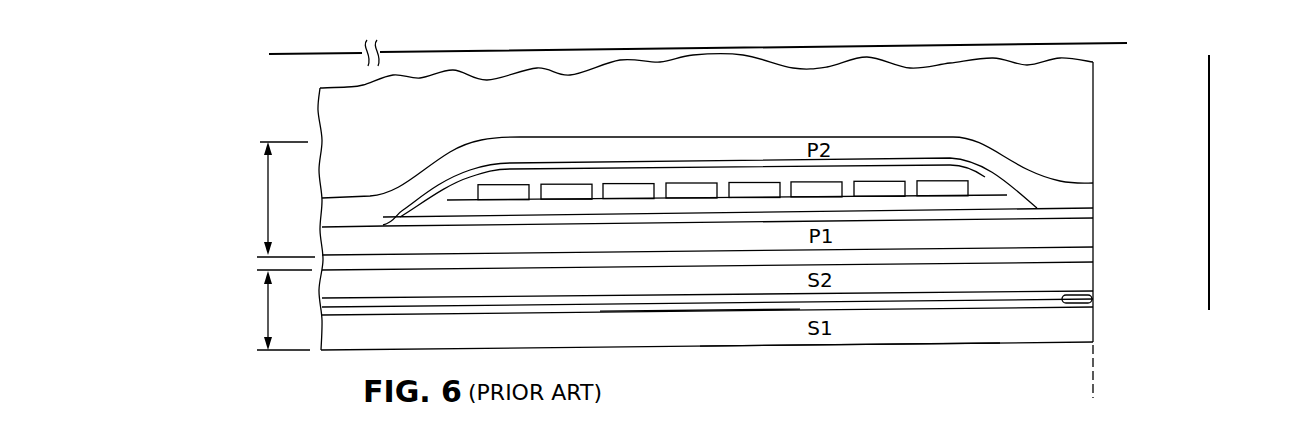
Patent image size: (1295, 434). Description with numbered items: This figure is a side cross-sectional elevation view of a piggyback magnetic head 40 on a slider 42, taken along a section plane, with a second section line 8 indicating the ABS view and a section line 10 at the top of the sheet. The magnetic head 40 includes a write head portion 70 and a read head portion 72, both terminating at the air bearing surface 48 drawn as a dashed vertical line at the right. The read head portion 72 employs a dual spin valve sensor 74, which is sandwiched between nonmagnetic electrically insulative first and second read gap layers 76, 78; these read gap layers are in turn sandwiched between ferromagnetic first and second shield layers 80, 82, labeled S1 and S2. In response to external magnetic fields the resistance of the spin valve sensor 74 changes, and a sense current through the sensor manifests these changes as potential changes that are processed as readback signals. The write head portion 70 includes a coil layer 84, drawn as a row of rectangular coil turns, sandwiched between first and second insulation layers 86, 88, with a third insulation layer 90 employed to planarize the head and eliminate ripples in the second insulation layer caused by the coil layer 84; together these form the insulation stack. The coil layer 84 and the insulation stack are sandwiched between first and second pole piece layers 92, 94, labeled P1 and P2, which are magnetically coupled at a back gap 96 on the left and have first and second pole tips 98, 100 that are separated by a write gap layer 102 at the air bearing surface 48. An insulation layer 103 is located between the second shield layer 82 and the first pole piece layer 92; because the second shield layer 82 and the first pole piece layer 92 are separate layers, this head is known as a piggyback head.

The section line 8- 8 is at (1222, 61).
The section line 10- 10 is at (277, 42).
The magnetic head 40 is at (297, 94).
The slider 42 is at (1078, 90).
The air bearing surface 48 is at (1093, 393).
The write head portion 70 is at (268, 203).
The read head portion 72 is at (268, 315).
The dual spin valve sensor 74 is at (1093, 300).
The first read gap layer 76 is at (772, 310).
The second read gap layer 78 is at (741, 291).
The first shield layer 80 is at (869, 332).
The second shield layer 82 is at (970, 278).
The coil layer 84 is at (688, 183).
The first insulation layer 86 is at (665, 208).
The second insulation layer 88 is at (985, 185).
The third insulation layer 90 is at (541, 166).
The first pole piece layer 92 is at (1017, 238).
The second pole piece layer 94 is at (882, 145).
The back gap 96 is at (360, 226).
The first pole tip 98 is at (1093, 233).
The second pole tip 100 is at (1087, 192).
The write gap layer 102 is at (1093, 211).
The insulation layer 103 is at (925, 257).